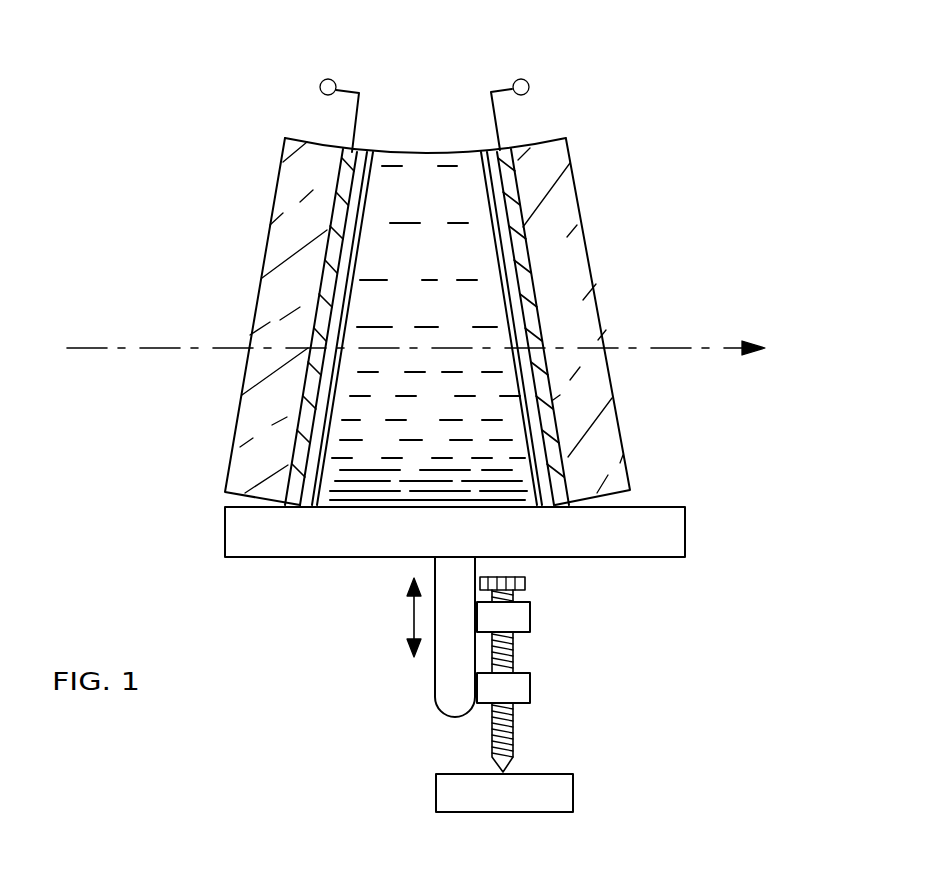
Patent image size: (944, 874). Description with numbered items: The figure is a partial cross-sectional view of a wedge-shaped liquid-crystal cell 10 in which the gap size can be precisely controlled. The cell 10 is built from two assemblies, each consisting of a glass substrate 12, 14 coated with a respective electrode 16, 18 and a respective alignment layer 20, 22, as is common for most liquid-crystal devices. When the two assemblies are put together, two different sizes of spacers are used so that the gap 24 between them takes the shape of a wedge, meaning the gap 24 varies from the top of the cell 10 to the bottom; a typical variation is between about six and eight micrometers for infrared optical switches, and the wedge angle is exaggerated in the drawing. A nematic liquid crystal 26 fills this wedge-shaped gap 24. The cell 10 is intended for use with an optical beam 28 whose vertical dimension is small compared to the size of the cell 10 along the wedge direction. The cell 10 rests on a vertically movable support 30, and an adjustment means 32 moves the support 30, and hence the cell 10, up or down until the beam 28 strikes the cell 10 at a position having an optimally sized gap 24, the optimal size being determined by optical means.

The wedge-shaped liquid-crystal cell 10 is at (652, 261).
The glass substrate 12 is at (272, 232).
The glass substrate 14 is at (585, 247).
The electrode 16 is at (344, 148).
The electrode 18 is at (502, 150).
The alignment layer 20 is at (372, 152).
The alignment layer 22 is at (481, 150).
The gap 24 is at (448, 128).
The nematic liquid crystal 26 is at (430, 172).
The optical beam 28 is at (157, 347).
The vertically movable support 30 is at (678, 530).
The adjustment means 32 is at (515, 653).